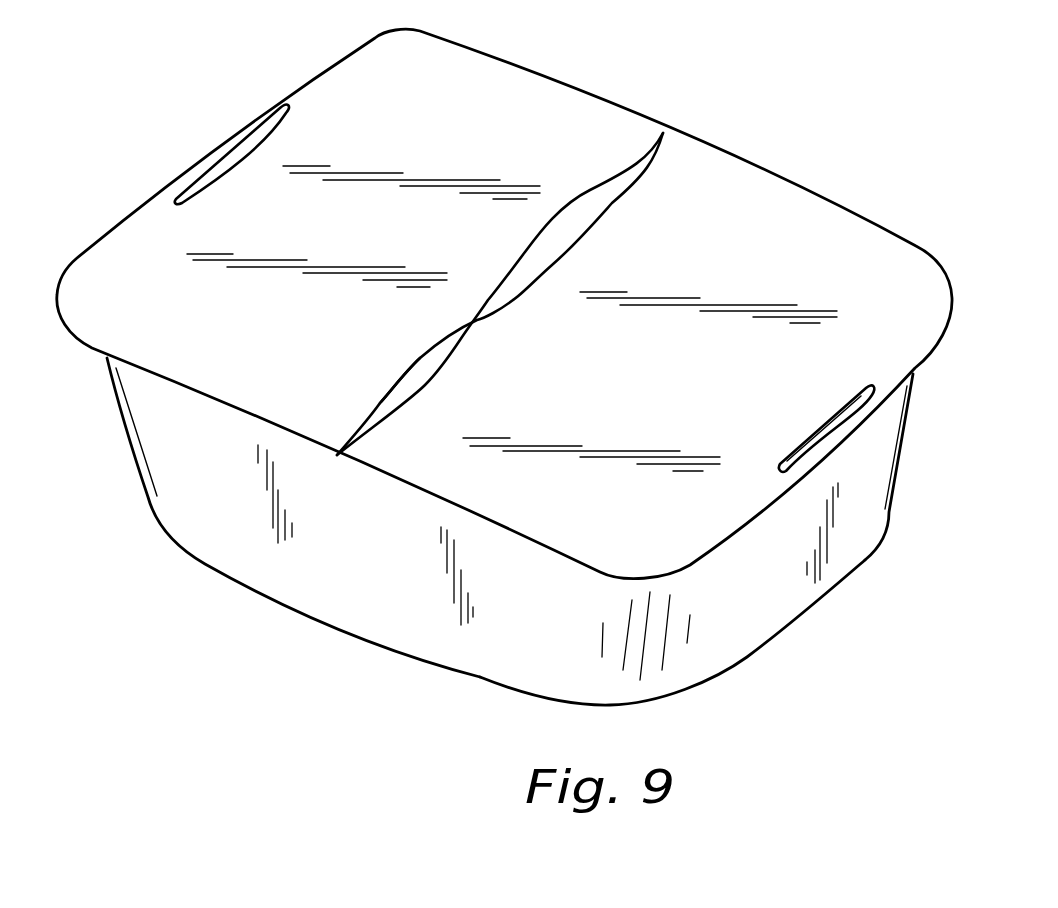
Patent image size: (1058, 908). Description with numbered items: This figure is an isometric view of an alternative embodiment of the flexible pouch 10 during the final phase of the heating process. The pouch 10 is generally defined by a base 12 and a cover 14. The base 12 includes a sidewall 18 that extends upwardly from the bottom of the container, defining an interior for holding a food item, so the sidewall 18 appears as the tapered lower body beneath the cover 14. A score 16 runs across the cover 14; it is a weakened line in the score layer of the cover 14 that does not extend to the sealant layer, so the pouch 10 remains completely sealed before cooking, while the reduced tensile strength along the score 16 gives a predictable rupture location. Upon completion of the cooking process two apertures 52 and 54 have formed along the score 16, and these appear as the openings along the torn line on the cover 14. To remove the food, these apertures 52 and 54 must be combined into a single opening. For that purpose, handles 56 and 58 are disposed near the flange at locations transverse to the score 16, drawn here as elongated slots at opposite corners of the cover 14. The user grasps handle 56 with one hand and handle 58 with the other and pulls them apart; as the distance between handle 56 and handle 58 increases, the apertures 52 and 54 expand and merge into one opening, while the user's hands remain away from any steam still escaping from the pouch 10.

The flexible pouch 10 is at (166, 135).
The base 12 is at (297, 547).
The cover 14 is at (124, 291).
The score 16 is at (648, 150).
The sidewall 18 is at (703, 633).
The aperture 52 is at (550, 230).
The aperture 54 is at (423, 366).
The handle 56 is at (827, 440).
The handle 58 is at (220, 153).